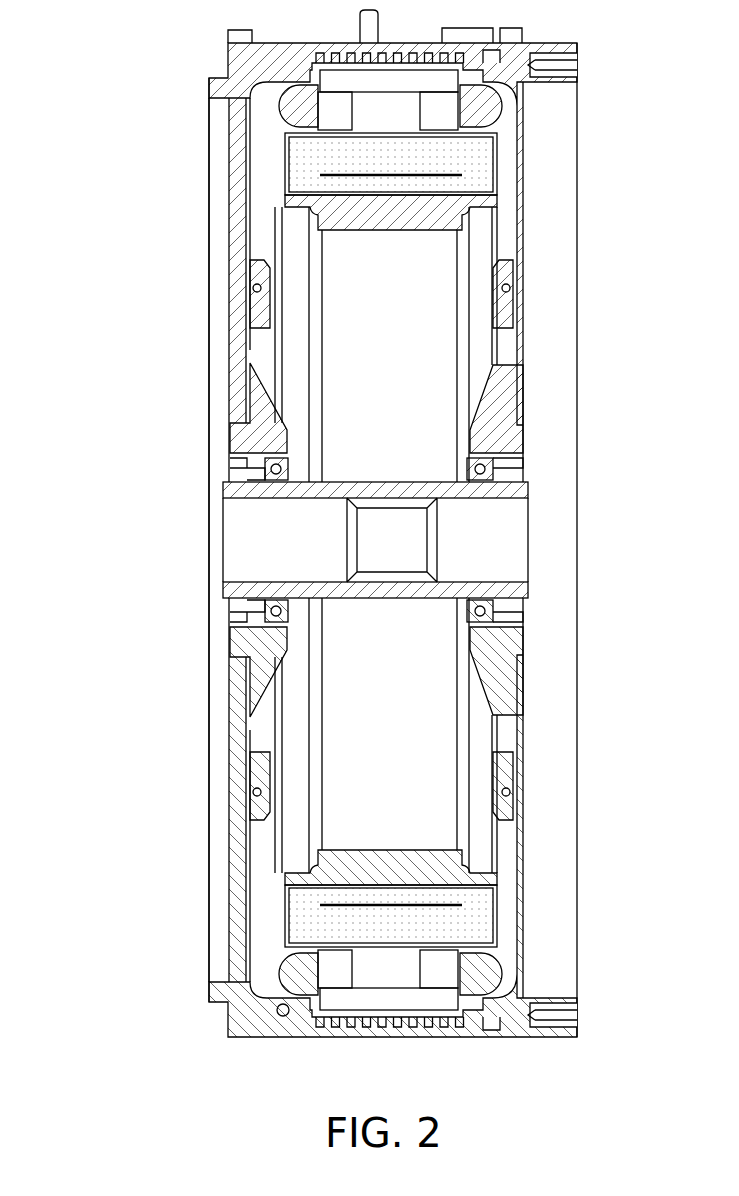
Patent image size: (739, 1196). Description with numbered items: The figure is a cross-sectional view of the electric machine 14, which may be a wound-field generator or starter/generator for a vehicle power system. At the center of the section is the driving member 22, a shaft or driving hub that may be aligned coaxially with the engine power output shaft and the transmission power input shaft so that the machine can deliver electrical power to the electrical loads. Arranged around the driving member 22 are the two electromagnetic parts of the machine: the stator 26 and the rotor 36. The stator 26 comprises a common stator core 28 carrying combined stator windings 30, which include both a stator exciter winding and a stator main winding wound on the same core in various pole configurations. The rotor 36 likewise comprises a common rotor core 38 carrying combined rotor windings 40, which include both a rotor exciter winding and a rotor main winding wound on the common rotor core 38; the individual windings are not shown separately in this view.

The electric machine 14 is at (140, 205).
The driving member 22 is at (515, 536).
The stator 26 is at (496, 107).
The common stator core 28 is at (338, 293).
The combined stator windings 30 is at (287, 107).
The rotor 36 is at (436, 282).
The common rotor core 38 is at (338, 768).
The combined rotor windings 40 is at (478, 160).